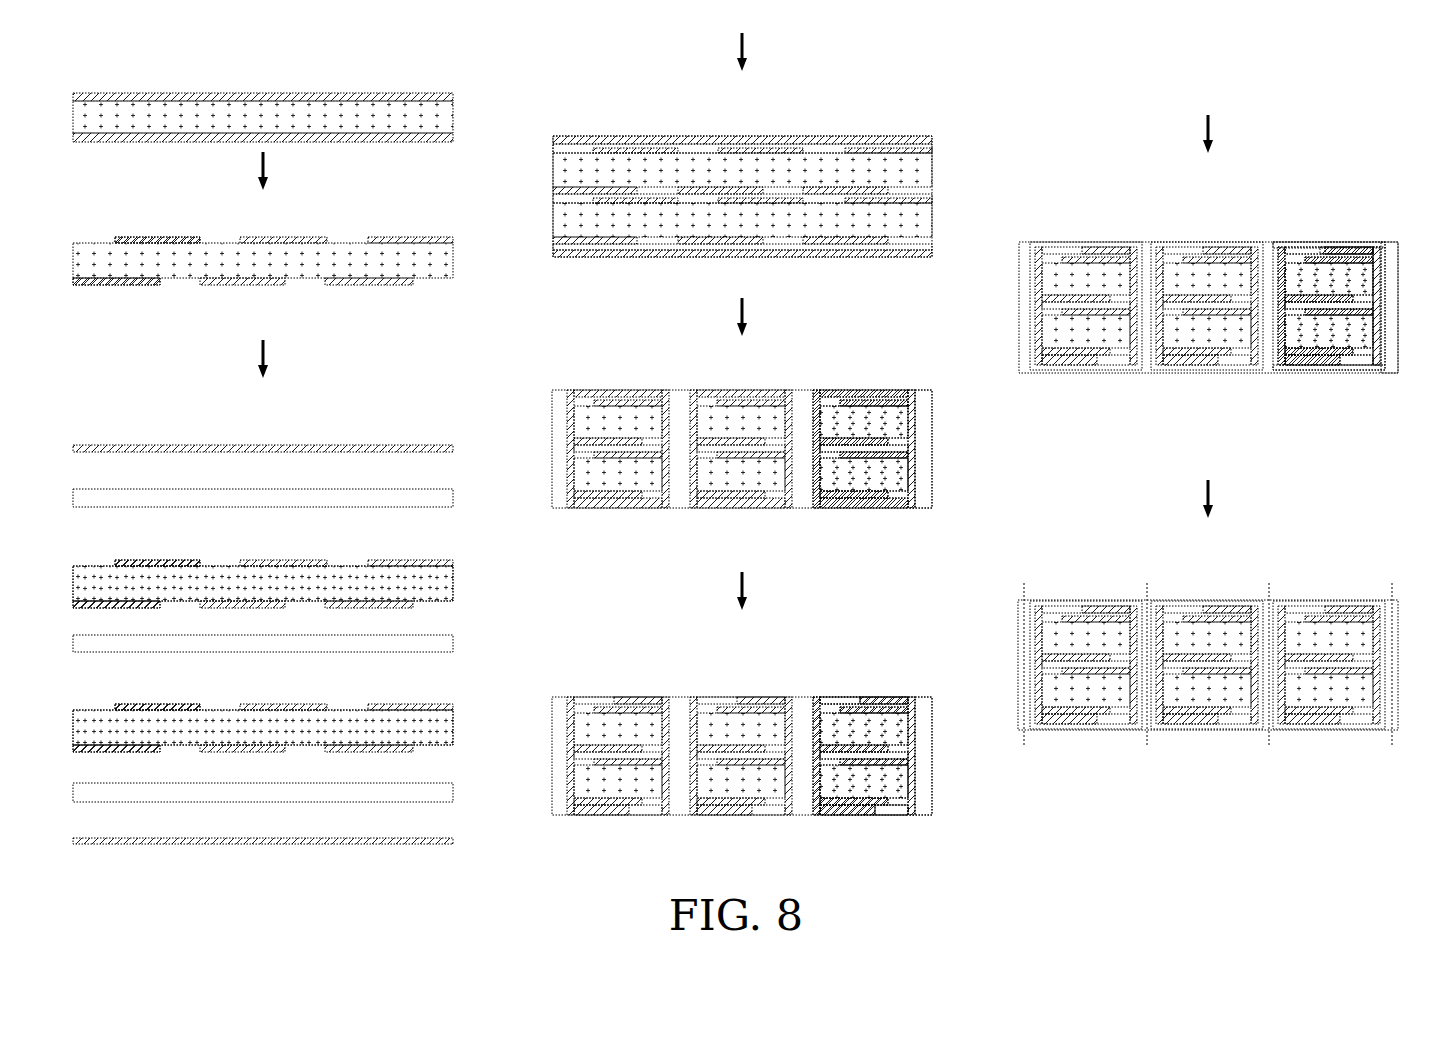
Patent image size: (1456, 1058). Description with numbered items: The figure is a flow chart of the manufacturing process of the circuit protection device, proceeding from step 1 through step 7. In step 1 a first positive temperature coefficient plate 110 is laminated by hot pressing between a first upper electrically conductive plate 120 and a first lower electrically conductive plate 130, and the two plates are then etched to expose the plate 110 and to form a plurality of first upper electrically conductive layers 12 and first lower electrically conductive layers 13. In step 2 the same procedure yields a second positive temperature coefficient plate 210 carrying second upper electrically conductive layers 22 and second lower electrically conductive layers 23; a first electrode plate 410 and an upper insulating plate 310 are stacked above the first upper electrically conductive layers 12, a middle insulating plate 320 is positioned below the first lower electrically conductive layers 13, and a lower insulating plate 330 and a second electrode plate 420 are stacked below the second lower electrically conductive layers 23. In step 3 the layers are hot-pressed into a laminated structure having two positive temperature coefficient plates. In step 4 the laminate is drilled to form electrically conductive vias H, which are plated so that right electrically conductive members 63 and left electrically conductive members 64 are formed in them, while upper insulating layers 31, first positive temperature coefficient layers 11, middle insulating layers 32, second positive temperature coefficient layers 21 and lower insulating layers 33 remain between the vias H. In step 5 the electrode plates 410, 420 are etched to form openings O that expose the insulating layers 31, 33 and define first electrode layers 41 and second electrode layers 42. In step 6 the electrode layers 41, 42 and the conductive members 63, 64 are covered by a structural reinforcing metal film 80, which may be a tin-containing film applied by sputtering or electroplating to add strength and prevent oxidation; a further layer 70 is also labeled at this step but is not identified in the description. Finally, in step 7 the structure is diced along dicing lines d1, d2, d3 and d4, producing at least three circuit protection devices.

The first positive temperature coefficient plate 110 is at (264, 108).
The first upper electrically conductive plate 120 is at (203, 97).
The first lower electrically conductive plate 130 is at (329, 137).
The first upper electrically conductive layer 12 is at (158, 240).
The first lower electrically conductive layer 13 is at (96, 282).
The first positive temperature coefficient layer 11 is at (866, 422).
The second positive temperature coefficient plate 210 is at (215, 727).
The second upper electrically conductive layer 22 is at (158, 707).
The second lower electrically conductive layer 23 is at (105, 748).
The second positive temperature coefficient layer 21 is at (861, 480).
The upper insulating plate 310 is at (438, 496).
The middle insulating plate 320 is at (440, 641).
The lower insulating plate 330 is at (440, 790).
The first electrode plate 410 is at (440, 448).
The second electrode plate 420 is at (440, 842).
The upper insulating layer 31 is at (833, 395).
The middle insulating layer 32 is at (900, 449).
The lower insulating layer 33 is at (896, 505).
The first electrode layer 41 is at (900, 700).
The second electrode layer 42 is at (840, 815).
The right electrically conductive member 63 is at (915, 505).
The left electrically conductive member 64 is at (817, 496).
The solder resist layer 70 is at (1308, 245).
The structural reinforcing metal film 80 is at (1343, 250).
The electrically conductive via H is at (924, 400).
The opening O is at (841, 692).
The step 1 is at (257, 161).
The step 2 is at (257, 353).
The step 3 is at (736, 43).
The step 4 is at (736, 311).
The step 5 is at (736, 583).
The step 6 is at (1202, 128).
The step 7 is at (1202, 491).
The dicing line d1 is at (1024, 668).
The dicing line d2 is at (1147, 668).
The dicing line d3 is at (1269, 668).
The dicing line d4 is at (1392, 668).